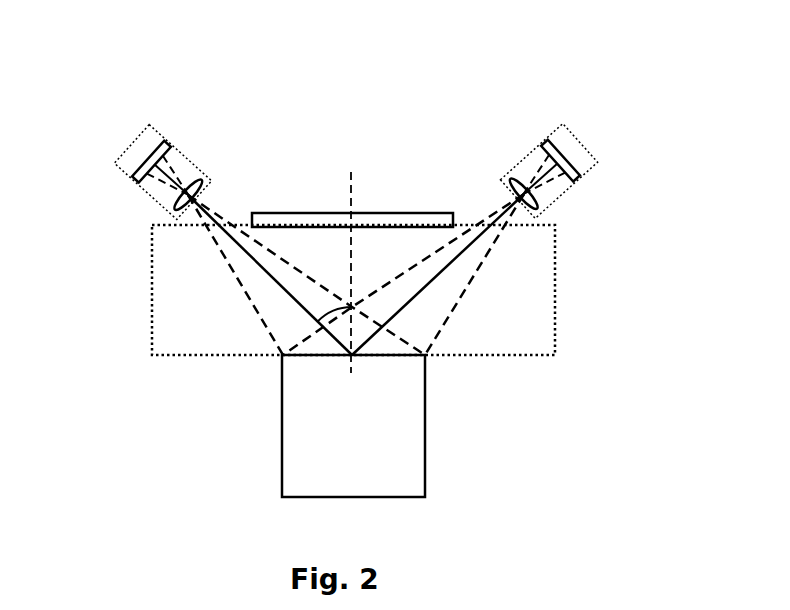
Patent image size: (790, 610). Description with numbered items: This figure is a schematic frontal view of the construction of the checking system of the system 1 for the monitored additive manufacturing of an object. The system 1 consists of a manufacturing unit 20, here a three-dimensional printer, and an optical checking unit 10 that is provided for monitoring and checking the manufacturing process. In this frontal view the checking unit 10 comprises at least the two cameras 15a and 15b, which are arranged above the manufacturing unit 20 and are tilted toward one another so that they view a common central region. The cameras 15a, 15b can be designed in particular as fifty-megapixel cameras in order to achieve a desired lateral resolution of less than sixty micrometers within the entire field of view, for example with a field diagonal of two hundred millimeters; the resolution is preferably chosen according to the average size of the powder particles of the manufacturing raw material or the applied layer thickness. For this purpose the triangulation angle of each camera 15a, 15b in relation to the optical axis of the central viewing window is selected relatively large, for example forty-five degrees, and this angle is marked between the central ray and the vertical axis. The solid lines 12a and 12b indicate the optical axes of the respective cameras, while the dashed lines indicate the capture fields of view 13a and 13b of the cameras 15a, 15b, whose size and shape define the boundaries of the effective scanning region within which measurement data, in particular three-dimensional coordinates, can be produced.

The system 1 is at (471, 61).
The checking unit 10 is at (78, 193).
The manufacturing unit 20 is at (580, 227).
The camera 15a is at (142, 155).
The camera 15b is at (572, 152).
The first light beam 12a is at (203, 276).
The second light beam 12b is at (504, 275).
The capture field of view 13a is at (240, 275).
The capture field of view 13b is at (470, 274).